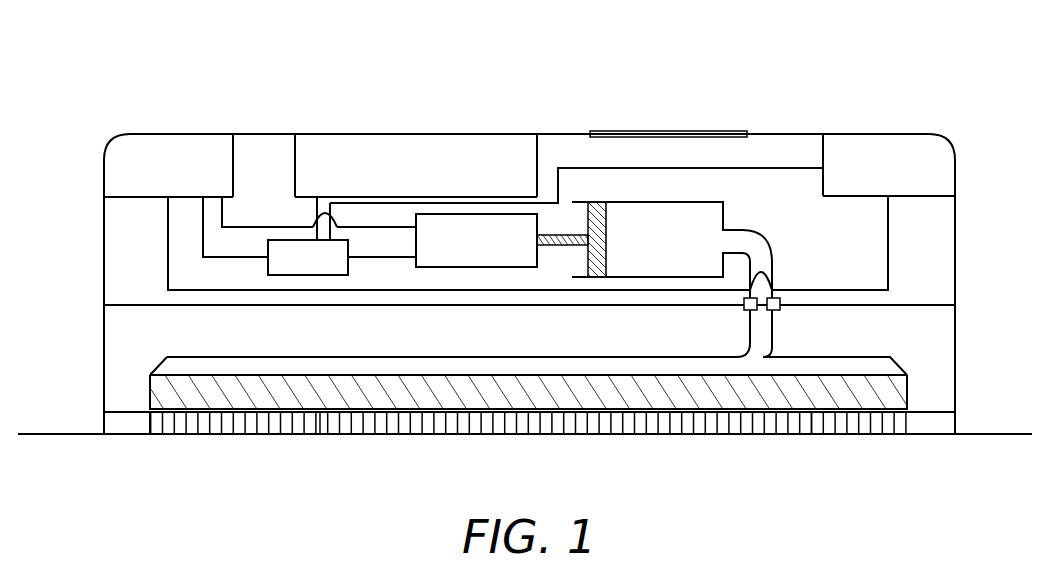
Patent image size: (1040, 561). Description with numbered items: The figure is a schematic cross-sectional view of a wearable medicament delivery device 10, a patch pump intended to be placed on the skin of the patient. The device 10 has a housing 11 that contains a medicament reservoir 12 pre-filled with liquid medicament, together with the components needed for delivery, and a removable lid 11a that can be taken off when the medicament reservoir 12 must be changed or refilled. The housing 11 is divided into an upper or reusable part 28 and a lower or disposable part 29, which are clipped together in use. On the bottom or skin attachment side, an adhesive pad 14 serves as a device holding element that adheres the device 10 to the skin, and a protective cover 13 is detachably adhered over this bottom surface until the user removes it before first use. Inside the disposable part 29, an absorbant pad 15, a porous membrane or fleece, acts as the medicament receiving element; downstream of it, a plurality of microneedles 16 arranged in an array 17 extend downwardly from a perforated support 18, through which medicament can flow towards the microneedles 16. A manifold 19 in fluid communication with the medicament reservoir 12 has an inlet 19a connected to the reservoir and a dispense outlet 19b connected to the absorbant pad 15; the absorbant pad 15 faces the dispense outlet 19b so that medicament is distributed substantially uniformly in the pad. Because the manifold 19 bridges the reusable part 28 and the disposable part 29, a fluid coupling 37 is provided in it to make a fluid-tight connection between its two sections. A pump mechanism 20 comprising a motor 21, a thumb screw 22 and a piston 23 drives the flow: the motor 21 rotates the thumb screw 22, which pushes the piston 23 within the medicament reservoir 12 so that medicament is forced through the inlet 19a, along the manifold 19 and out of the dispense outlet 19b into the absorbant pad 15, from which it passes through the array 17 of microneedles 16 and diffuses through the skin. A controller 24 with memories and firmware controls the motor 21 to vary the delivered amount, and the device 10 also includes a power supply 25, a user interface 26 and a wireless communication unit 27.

The medicament delivery device 10 is at (112, 92).
The housing 11 is at (103, 265).
The lid 11a is at (655, 131).
The medicament reservoir 12 is at (710, 210).
The protective cover 13 is at (1003, 437).
The adhesive pad 14 is at (127, 425).
The absorbant pad 15 is at (897, 390).
The microneedles 16 is at (400, 437).
The array 17 is at (326, 442).
The support 18 is at (818, 413).
The manifold 19 is at (775, 323).
The inlet 19a is at (727, 238).
The dispense outlet 19b is at (888, 362).
The pump mechanism 20 is at (578, 186).
The motor 21 is at (440, 257).
The thumb screw 22 is at (557, 237).
The piston 23 is at (598, 270).
The controller 24 is at (325, 267).
The power supply 25 is at (197, 143).
The user interface 26 is at (415, 143).
The wireless communication unit 27 is at (855, 143).
The reusable part 28 is at (103, 207).
The disposable part 29 is at (103, 360).
The fluid coupling 37 is at (741, 311).